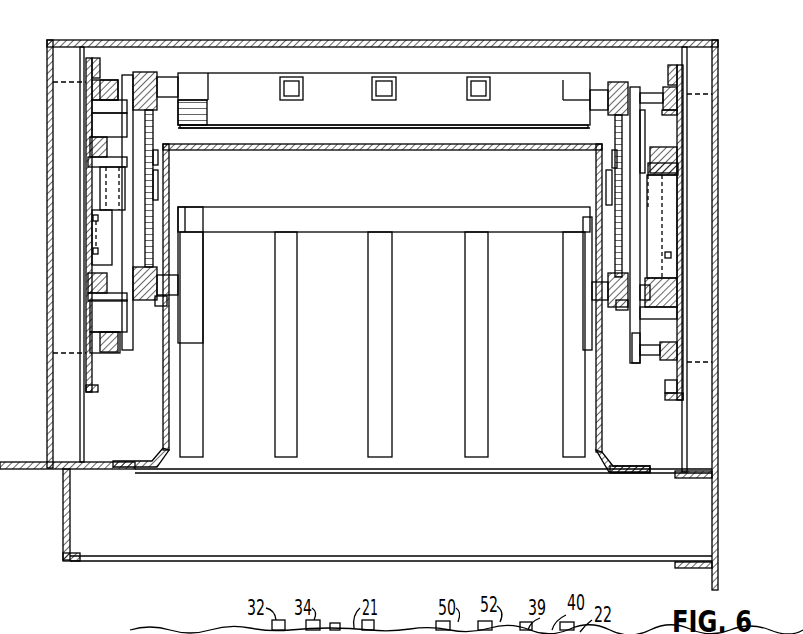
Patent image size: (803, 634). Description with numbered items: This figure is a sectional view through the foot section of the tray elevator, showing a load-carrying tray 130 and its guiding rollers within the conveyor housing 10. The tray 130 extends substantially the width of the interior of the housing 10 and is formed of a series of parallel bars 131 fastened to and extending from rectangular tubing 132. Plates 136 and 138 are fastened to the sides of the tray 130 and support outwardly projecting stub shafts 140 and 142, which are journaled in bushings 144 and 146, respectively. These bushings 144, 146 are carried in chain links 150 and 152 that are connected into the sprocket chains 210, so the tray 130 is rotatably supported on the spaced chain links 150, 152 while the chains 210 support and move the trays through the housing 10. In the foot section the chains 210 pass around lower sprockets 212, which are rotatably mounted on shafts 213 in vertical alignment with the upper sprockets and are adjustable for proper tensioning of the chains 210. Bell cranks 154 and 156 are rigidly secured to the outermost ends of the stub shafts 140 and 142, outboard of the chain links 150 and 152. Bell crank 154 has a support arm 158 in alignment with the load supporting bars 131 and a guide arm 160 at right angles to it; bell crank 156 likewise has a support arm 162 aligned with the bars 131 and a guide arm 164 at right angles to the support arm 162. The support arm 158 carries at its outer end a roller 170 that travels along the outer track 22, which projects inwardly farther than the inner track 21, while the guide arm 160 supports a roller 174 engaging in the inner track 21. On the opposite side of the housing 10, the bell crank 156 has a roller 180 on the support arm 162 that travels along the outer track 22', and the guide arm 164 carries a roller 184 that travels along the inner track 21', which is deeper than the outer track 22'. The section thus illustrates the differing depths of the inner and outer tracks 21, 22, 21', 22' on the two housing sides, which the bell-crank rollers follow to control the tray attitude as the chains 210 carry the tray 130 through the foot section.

The conveyor housing 10 is at (748, 272).
The inner track 21 is at (69, 239).
The inner track 21' is at (703, 219).
The outer track 22 is at (74, 229).
The outer track 22' is at (696, 218).
The load-carrying tray 130 is at (432, 83).
The parallel bars 131 is at (382, 345).
The rectangular tubing 132 is at (457, 115).
The plate 136 is at (205, 112).
The plate 138 is at (598, 88).
The stub shaft 140 is at (170, 82).
The stub shaft 142 is at (598, 282).
The bushing 144 is at (125, 85).
The bushing 146 is at (634, 90).
The chain link 150 is at (150, 90).
The chain link 152 is at (618, 95).
The bell crank 154 is at (127, 112).
The bell crank 156 is at (677, 97).
The support arm 158 is at (127, 317).
The guide arm 160 is at (127, 128).
The support arm 162 is at (640, 130).
The guide arm 164 is at (640, 320).
The roller 170 is at (113, 87).
The roller 174 is at (95, 147).
The roller 180 is at (690, 97).
The roller 184 is at (678, 163).
The sprocket chain 210 is at (160, 302).
The lower sprocket 212 is at (155, 158).
The shaft 213 is at (158, 187).